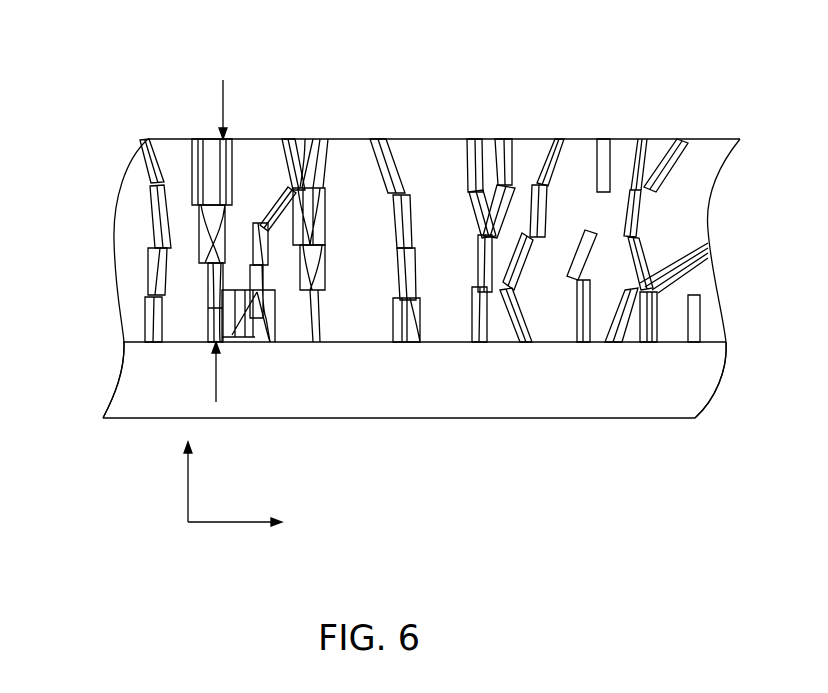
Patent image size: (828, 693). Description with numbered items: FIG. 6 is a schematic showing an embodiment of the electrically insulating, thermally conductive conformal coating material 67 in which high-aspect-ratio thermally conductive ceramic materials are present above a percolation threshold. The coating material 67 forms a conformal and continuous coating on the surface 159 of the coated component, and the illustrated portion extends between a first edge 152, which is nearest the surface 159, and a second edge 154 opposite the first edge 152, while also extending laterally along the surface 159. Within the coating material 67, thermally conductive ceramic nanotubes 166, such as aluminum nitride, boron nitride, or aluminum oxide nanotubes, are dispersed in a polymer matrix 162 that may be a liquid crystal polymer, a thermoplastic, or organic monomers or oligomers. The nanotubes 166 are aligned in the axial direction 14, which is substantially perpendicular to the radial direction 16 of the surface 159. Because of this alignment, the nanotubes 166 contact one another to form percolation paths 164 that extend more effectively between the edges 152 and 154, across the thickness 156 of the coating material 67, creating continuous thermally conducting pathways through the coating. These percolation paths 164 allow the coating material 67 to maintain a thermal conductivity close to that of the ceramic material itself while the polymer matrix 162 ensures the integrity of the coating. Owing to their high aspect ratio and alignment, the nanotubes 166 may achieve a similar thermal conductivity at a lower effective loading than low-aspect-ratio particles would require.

The coating material 67 is at (152, 87).
The thickness 156 is at (223, 105).
The polymer matrix 162 is at (347, 157).
The percolation paths 164 is at (464, 160).
The thermally conductive ceramic nanotubes 166 is at (602, 163).
The second edge 154 is at (623, 139).
The first edge 152 is at (597, 343).
The surface 159 is at (138, 380).
The axial direction 14 is at (188, 480).
The radial direction 16 is at (235, 525).